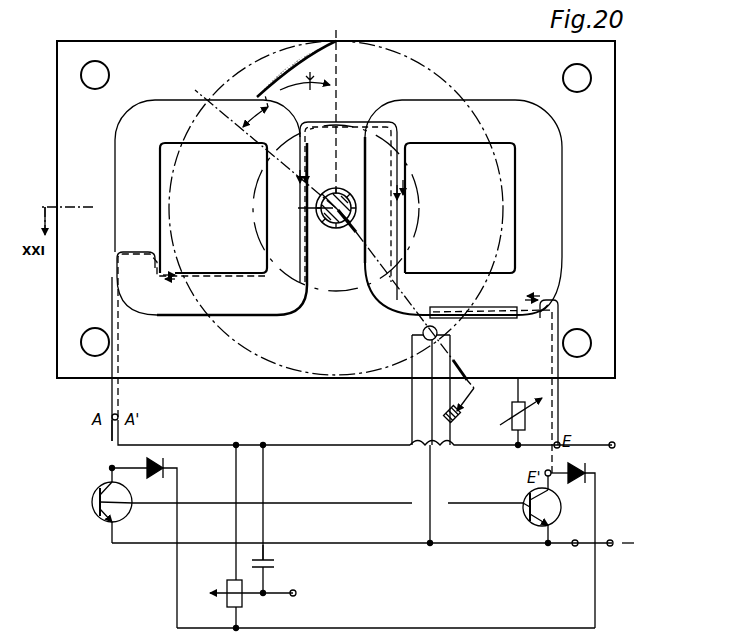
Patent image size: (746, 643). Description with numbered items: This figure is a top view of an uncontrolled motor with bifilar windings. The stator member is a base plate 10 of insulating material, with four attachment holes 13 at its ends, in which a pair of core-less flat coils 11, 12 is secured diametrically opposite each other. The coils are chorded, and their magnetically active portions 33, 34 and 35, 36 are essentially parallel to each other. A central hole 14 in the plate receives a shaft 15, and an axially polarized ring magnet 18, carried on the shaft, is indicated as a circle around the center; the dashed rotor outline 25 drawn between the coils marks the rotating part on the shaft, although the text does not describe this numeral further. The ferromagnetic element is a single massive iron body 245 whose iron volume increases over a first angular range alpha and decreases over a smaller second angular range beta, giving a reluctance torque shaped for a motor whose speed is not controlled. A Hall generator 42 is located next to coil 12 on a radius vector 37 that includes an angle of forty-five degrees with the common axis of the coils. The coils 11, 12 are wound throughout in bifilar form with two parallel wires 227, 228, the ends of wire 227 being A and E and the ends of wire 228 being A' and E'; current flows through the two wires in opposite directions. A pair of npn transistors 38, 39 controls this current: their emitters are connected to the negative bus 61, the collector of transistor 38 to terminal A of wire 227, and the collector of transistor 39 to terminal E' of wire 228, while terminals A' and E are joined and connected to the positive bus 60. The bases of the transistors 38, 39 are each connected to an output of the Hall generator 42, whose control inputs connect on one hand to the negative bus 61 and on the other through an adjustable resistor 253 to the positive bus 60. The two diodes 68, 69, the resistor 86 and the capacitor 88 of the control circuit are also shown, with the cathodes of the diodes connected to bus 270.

The base plate 10 is at (120, 50).
The attachment holes 13 is at (91, 62).
The flat coil 11 is at (172, 105).
The flat coil 12 is at (550, 188).
The ring magnet 18 is at (433, 42).
The massive iron body 245 is at (247, 77).
The magnetically active portion 33 is at (213, 133).
The magnetically active portion 34 is at (213, 283).
The magnetically active portion 35 is at (452, 133).
The magnetically active portion 36 is at (460, 283).
The radius vector 37 is at (410, 300).
The rotor 25 is at (320, 173).
The central hole 14 is at (330, 225).
The shaft 15 is at (336, 225).
The Hall generator 42 is at (423, 333).
The wire 227 is at (112, 318).
The wire 228 is at (120, 343).
The adjustable resistor 253 is at (510, 414).
The npn transistor 38 is at (100, 497).
The npn transistor 39 is at (555, 507).
The diode 68 is at (165, 460).
The diode 69 is at (588, 470).
The positive bus 60 is at (612, 442).
The negative bus 61 is at (610, 548).
The capacitor 88 is at (267, 562).
The resistor 86 is at (238, 598).
The bus 270 is at (428, 628).